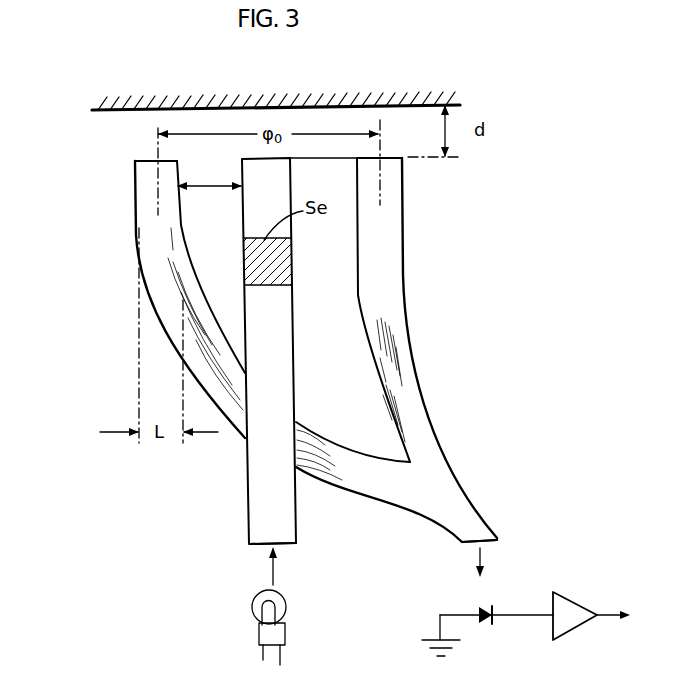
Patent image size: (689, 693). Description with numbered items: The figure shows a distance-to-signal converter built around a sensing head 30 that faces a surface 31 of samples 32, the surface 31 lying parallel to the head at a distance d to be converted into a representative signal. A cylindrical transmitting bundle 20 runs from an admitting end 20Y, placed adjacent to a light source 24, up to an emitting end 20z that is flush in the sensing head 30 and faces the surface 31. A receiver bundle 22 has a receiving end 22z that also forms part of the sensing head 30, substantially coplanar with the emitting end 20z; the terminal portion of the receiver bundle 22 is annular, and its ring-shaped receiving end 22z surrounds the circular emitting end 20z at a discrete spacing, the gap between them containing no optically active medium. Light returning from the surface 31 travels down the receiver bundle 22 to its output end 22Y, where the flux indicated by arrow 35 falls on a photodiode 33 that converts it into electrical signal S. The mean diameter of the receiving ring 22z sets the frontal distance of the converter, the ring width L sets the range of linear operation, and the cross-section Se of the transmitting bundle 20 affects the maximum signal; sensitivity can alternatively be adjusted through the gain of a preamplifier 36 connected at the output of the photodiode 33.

The transmitting bundle 20 is at (268, 503).
The emitting end 20z is at (268, 159).
The admitting end 20Y is at (260, 548).
The receiver bundle 22 is at (453, 483).
The receiving end 22z is at (388, 157).
The output end 22Y is at (492, 542).
The light source 24 is at (282, 602).
The sensing head 30 is at (213, 152).
The surface 31 is at (112, 112).
The samples 32 is at (108, 106).
The photodiode 33 is at (486, 620).
The arrow 35 is at (208, 189).
The preamplifier 36 is at (570, 620).